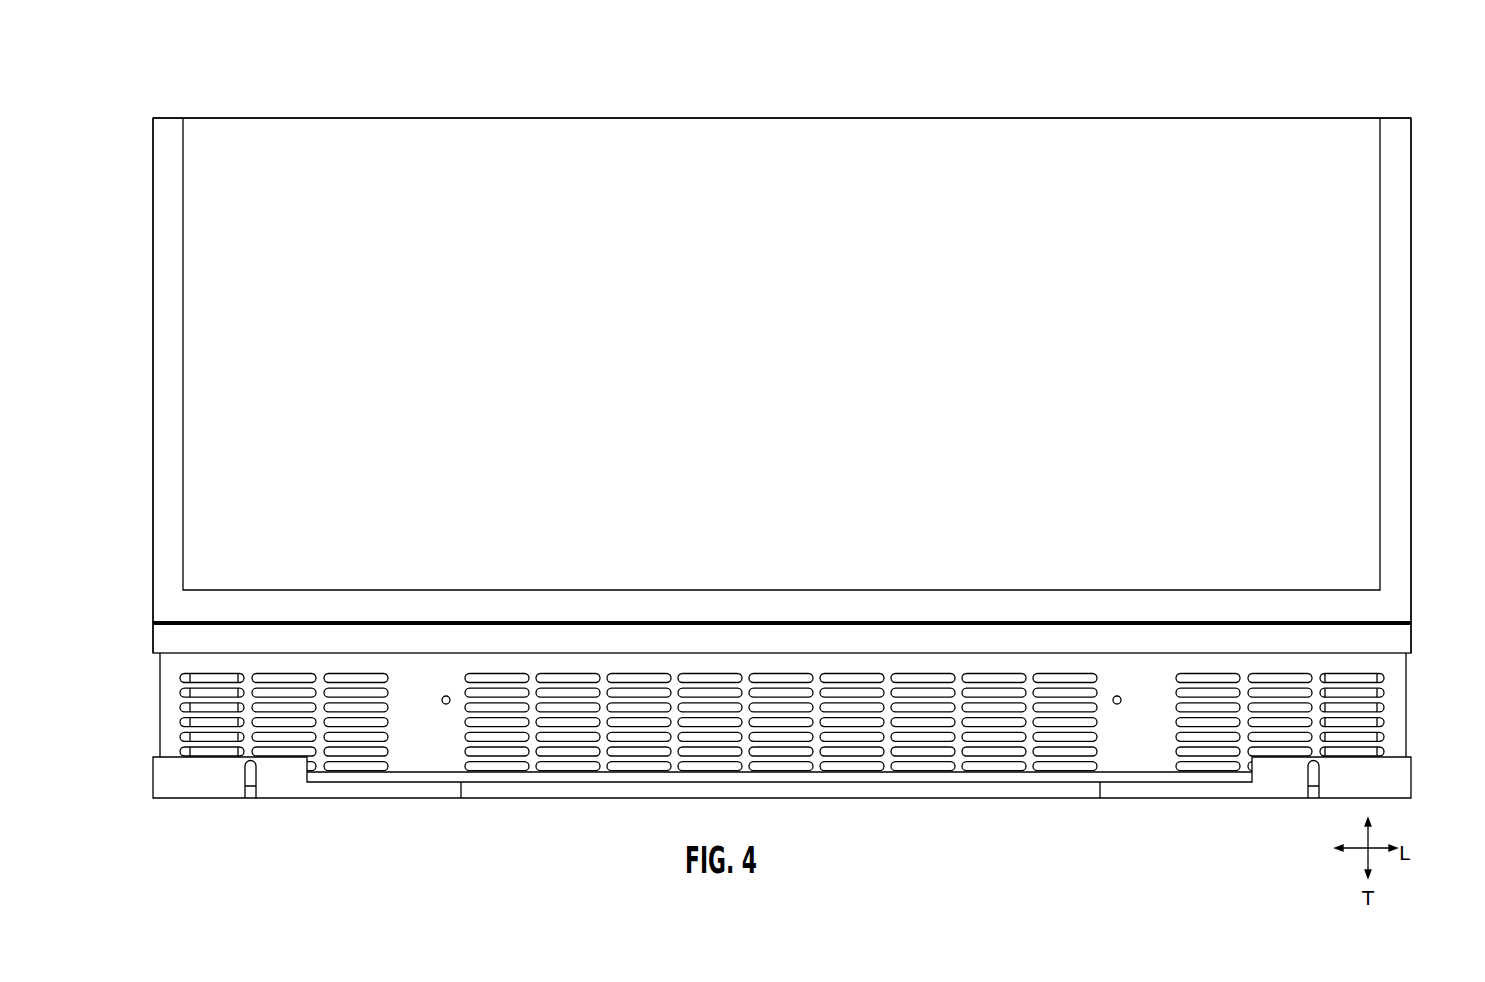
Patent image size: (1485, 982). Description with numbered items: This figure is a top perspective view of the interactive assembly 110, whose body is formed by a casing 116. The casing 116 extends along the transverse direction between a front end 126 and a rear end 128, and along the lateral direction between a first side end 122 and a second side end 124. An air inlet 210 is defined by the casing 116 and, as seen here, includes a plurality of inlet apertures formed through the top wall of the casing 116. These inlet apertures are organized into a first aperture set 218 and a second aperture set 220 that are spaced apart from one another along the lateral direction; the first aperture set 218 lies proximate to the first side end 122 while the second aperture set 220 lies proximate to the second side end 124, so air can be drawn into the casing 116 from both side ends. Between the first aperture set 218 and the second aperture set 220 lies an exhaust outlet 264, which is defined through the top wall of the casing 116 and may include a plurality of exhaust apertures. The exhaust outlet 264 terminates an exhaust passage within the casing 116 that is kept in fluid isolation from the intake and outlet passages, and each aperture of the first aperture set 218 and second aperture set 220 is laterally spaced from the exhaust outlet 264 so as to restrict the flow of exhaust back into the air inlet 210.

The interactive assembly 110 is at (1045, 68).
The casing 116 is at (1318, 128).
The first side end 122 is at (1412, 338).
The second side end 124 is at (152, 378).
The front end 126 is at (1026, 798).
The rear end 128 is at (697, 118).
The air inlet 210 is at (783, 636).
The first aperture set 218 is at (1312, 530).
The second aperture set 220 is at (278, 672).
The exhaust outlet 264 is at (852, 672).